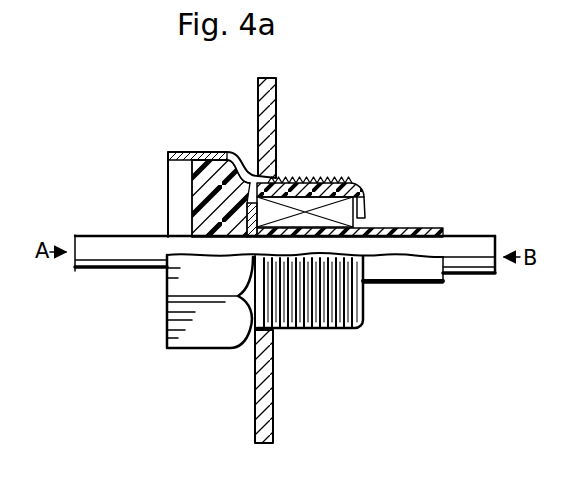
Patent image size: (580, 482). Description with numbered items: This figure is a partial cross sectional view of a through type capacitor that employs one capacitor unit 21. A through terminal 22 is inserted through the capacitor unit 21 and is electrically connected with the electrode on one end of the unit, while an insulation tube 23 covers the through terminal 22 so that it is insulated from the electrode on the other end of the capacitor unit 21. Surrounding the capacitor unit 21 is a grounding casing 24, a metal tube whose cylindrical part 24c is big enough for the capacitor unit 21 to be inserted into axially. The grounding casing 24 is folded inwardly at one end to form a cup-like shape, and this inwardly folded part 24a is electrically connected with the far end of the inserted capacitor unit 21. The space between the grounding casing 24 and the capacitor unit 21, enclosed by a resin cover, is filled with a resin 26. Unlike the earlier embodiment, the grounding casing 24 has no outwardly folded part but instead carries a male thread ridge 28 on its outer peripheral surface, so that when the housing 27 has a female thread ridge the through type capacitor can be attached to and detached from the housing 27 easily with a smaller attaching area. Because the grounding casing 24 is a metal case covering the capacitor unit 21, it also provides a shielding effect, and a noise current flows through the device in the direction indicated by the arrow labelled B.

The capacitor unit 21 is at (338, 210).
The through terminal 22 is at (476, 264).
The insulation tube 23 is at (433, 232).
The grounding casing 24 is at (368, 331).
The inwardly folded part 24a is at (363, 189).
The cylindrical part 24c is at (322, 177).
The resin 26 is at (185, 177).
The housing 27 is at (277, 94).
The male thread ridge 28 is at (295, 333).